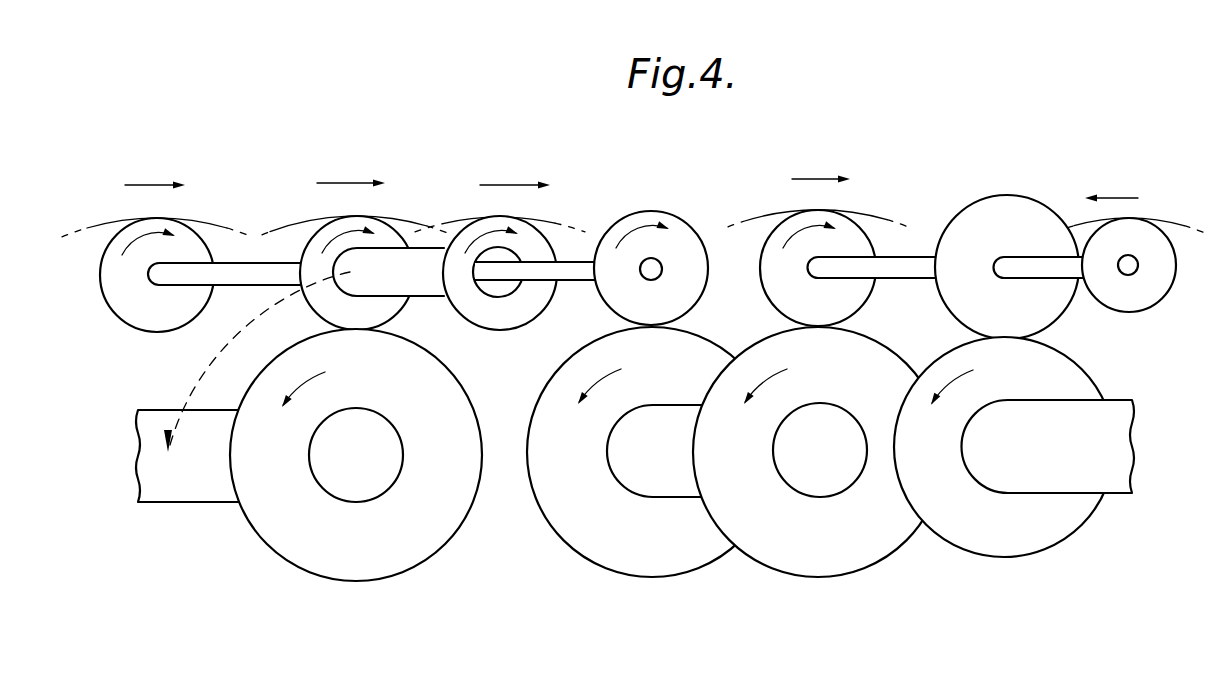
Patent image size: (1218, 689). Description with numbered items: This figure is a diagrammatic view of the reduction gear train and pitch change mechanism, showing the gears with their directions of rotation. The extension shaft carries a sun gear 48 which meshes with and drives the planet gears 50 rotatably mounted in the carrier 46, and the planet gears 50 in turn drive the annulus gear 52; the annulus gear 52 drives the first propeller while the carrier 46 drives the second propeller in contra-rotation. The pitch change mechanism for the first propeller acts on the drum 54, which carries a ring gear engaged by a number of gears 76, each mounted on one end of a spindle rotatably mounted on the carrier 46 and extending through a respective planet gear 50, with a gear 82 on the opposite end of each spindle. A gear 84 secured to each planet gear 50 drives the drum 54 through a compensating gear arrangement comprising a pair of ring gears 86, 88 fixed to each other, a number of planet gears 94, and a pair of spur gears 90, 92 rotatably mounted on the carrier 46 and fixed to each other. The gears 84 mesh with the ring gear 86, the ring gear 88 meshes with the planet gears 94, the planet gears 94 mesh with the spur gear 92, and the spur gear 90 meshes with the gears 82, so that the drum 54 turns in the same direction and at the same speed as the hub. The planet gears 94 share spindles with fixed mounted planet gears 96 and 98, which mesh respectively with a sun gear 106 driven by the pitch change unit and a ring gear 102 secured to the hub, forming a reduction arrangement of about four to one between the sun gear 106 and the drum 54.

The carrier 46 is at (192, 363).
The sun gear 48 is at (280, 540).
The planet gears 50 is at (317, 303).
The annulus gear 52 is at (280, 228).
The first drum 54 is at (195, 218).
The gears 76 is at (137, 318).
The gear 82 is at (665, 218).
The gear 84 is at (477, 312).
The ring gear 86 is at (543, 215).
The ring gear 88 is at (855, 212).
The spur gear 90 is at (585, 540).
The spur gear 92 is at (797, 562).
The planet gears 94 is at (773, 297).
The planet gear 96 is at (953, 297).
The planet gear 98 is at (1128, 300).
The ring gear 102 is at (1152, 218).
The sun gear 106 is at (1003, 545).